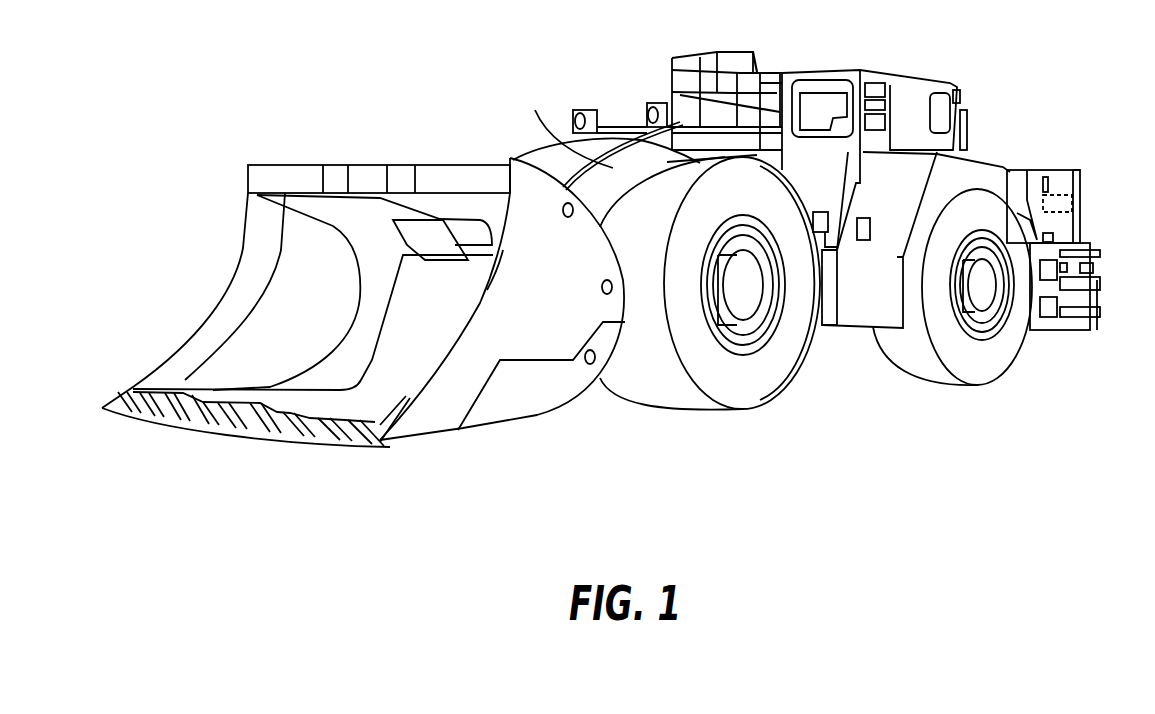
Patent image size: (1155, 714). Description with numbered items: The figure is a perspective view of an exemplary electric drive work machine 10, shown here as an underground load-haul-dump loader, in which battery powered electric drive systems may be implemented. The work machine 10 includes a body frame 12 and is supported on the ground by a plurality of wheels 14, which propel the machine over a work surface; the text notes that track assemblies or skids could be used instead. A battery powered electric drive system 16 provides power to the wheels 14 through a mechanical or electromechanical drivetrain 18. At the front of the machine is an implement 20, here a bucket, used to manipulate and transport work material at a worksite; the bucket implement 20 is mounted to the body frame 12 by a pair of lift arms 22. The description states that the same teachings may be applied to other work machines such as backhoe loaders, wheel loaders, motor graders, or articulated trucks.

The electric drive work machine 10 is at (230, 42).
The body frame 12 is at (983, 163).
The wheels 14 is at (748, 382).
The battery powered electric drive system 16 is at (1074, 204).
The drivetrain 18 is at (1037, 223).
The implement 20 is at (290, 164).
The lift arms 22 is at (535, 153).